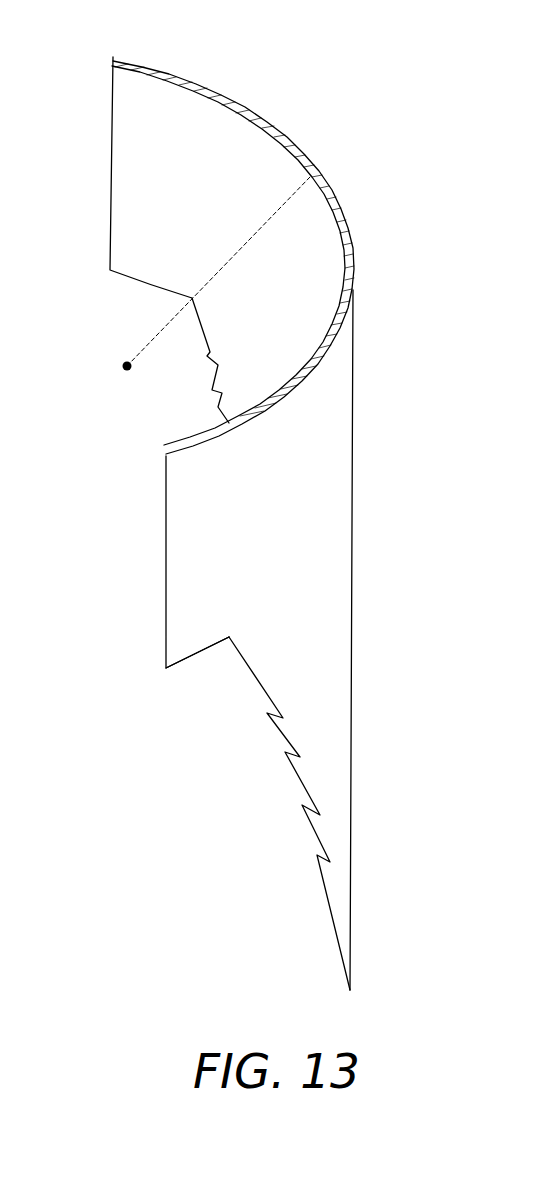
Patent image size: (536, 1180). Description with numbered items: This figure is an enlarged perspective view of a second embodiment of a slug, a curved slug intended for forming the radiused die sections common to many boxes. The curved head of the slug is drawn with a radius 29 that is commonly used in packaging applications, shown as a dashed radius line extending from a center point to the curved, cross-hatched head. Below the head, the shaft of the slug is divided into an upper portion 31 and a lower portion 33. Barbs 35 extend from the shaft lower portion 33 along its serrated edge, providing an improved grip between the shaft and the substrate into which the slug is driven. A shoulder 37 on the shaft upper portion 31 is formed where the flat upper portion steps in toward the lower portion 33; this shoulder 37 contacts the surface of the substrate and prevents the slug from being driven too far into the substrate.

The radius 29 is at (170, 323).
The upper portion 31 is at (164, 552).
The lower portion 33 is at (354, 749).
The barbs 35 is at (300, 805).
The shoulder 37 is at (179, 664).